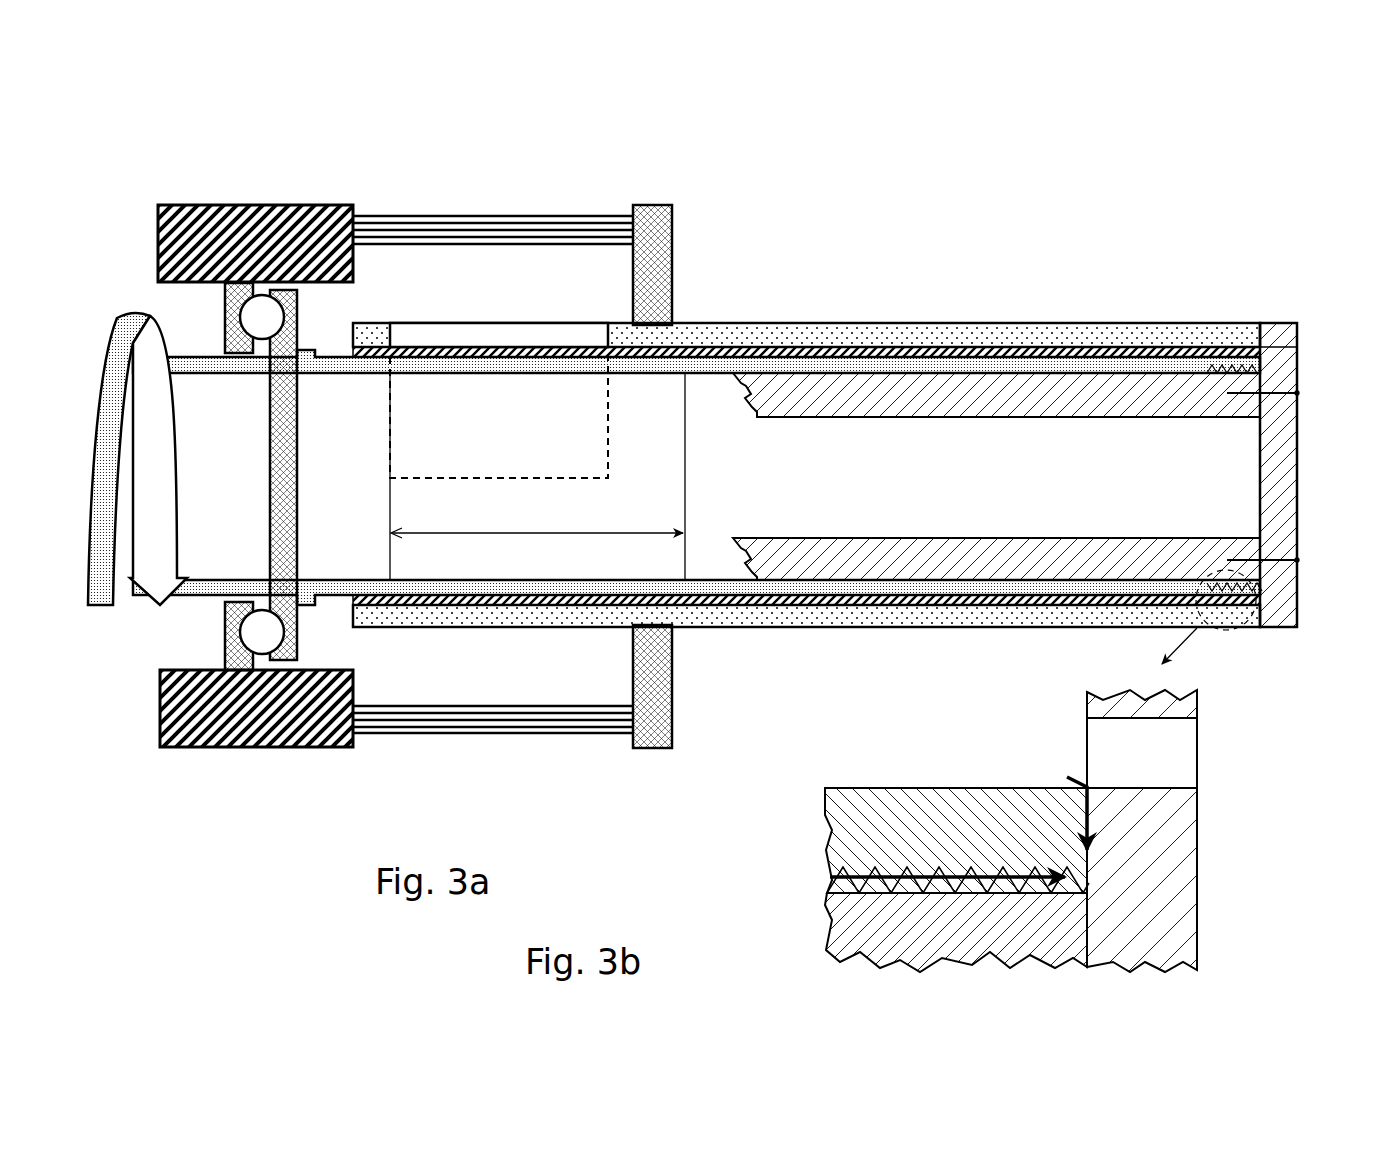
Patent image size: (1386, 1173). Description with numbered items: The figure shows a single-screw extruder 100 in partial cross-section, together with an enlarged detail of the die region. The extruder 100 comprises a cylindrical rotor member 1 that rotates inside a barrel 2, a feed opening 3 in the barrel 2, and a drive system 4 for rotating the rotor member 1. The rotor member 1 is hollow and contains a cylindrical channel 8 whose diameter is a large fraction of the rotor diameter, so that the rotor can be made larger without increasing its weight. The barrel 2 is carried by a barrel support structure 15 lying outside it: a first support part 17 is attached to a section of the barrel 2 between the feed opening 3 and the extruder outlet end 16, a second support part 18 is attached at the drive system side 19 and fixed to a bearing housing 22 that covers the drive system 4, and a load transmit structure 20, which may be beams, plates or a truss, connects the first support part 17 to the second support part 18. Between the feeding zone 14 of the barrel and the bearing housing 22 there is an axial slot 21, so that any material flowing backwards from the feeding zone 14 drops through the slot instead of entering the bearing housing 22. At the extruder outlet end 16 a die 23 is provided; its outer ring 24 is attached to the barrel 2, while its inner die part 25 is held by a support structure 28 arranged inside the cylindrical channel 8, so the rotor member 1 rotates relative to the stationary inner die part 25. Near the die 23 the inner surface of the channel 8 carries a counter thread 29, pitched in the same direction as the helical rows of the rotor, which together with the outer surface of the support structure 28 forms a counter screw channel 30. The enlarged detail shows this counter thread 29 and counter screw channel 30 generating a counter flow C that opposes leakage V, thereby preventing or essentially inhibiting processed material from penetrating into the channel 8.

In FIG. 3A, the rotor member 1 is at (700, 578).
In FIG. 3A, the barrel 2 is at (745, 627).
In FIG. 3A, the feed opening 3 is at (545, 416).
In FIG. 3A, the drive system 4 is at (224, 153).
In FIG. 3A, the channel 8 is at (808, 509).
In FIG. 3A, the feeding zone 14 is at (537, 476).
In FIG. 3A, the barrel support structure 15 is at (682, 156).
In FIG. 3A, the extruder outlet end 16 is at (1249, 282).
In FIG. 3A, the first support part 17 is at (660, 246).
In FIG. 3A, the second support part 18 is at (300, 240).
In FIG. 3A, the drive system side 19 is at (332, 164).
In FIG. 3A, the load transmit structure 20 is at (453, 226).
In FIG. 3A, the axial slot 21 is at (330, 352).
In FIG. 3A, the bearing housing 22 is at (360, 668).
In FIG. 3A, the die 23 is at (1330, 607).
In FIG. 3A, the outer ring 24 is at (1271, 336).
In FIG. 3A, the inner die part 25 is at (1270, 440).
In FIG. 3A, the support structure 28 is at (933, 556).
In FIG. 3A, the counter thread 29 is at (1213, 350).
In FIG. 3B, the counter thread 29 is at (921, 873).
In FIG. 3B, the counter screw channel 30 is at (846, 886).
In FIG. 3A, the extruder 100 is at (932, 252).
In FIG. 3B, the counter flow C is at (985, 875).
In FIG. 3B, the leakage V is at (1090, 812).